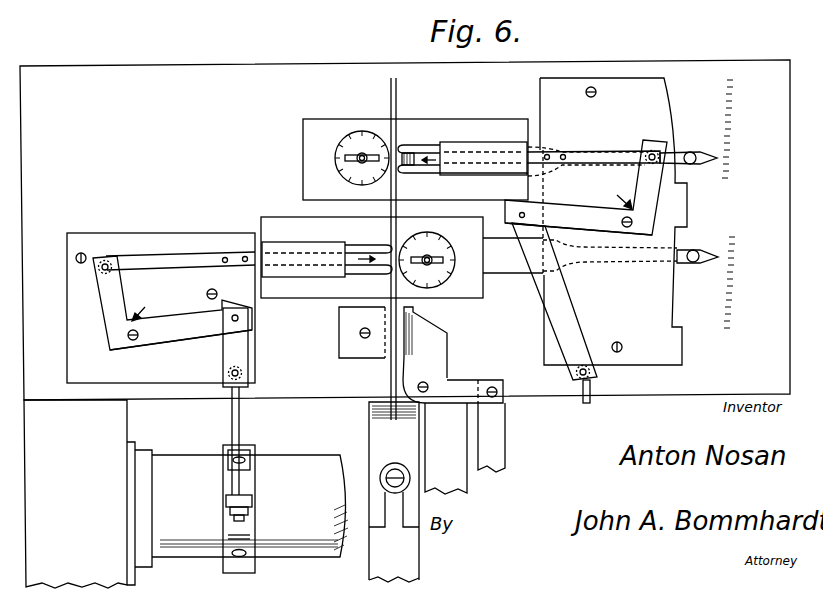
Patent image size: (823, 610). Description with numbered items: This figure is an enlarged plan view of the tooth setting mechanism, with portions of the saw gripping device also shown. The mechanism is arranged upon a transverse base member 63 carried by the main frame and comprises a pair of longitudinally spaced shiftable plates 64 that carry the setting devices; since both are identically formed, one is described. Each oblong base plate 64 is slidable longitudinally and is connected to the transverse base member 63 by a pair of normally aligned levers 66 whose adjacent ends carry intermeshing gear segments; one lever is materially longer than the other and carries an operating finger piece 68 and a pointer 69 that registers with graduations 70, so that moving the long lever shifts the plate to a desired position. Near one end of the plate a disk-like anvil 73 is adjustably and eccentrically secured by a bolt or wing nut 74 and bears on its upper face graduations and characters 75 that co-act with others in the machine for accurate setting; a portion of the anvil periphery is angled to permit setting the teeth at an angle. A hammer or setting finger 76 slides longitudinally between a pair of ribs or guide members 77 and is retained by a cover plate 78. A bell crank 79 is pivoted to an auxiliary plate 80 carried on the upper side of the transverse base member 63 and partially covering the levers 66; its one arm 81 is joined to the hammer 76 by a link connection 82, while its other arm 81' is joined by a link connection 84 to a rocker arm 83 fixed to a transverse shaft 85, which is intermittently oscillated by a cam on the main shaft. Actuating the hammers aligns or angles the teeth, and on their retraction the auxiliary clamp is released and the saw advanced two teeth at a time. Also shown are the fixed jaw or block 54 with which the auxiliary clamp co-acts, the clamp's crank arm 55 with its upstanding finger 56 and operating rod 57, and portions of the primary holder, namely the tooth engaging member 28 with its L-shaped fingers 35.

The transverse base member 63 is at (405, 324).
The shiftable base plate 64 is at (478, 121).
The bolt or wing nut 74 is at (345, 147).
The graduations and characters 75 is at (312, 180).
The hammer or setting finger 76 is at (432, 153).
The ribs or guide members 77 is at (409, 152).
The cover plate 78 is at (485, 150).
The disk-like anvil 73 is at (452, 290).
The levers 66 is at (538, 150).
The link connection 82 is at (598, 151).
The operating finger piece 68 is at (692, 152).
The pointer 69 is at (703, 165).
The graduations 70 is at (745, 164).
The auxiliary plate 80 is at (134, 238).
The bell crank arm 81 is at (375, 245).
The other bell crank arm 81' is at (381, 275).
The bell crank 79 is at (382, 251).
The fixed jaw or block 54 is at (340, 345).
The upstanding finger 56 is at (430, 325).
The crank arm 55 is at (445, 380).
The operating rod 57 is at (505, 424).
The L-shaped fingers 35 is at (394, 491).
The saw tooth engaging member 28 is at (394, 565).
The link connection 84 is at (242, 430).
The rocker arm 83 is at (256, 485).
The transverse shaft 85 is at (237, 513).